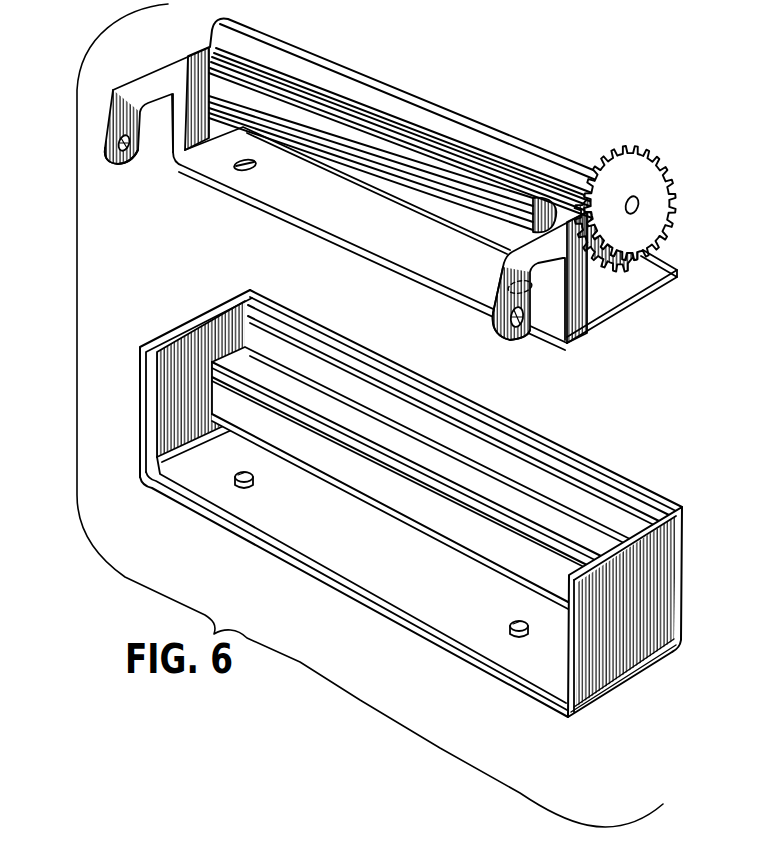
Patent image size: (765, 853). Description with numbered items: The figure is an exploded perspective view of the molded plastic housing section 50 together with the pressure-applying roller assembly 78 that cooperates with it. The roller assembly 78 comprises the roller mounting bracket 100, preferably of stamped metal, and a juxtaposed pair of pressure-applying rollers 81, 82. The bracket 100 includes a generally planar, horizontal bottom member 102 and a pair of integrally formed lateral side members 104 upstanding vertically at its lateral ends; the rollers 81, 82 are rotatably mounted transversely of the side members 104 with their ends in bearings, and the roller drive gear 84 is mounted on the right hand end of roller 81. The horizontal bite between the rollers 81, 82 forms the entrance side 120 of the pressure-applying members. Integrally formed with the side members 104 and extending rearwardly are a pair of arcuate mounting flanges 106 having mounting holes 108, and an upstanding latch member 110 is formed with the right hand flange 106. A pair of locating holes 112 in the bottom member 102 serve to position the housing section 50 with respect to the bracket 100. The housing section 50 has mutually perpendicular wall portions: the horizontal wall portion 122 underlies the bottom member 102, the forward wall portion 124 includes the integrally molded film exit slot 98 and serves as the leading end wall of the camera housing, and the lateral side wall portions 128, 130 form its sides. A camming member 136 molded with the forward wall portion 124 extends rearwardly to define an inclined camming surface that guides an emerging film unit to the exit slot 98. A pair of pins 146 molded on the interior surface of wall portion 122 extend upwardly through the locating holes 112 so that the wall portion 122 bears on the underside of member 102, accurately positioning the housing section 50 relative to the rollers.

The housing section 50 is at (409, 528).
The pressure-applying roller assembly 78 is at (193, 190).
The pressure-applying roller 81 is at (403, 139).
The pressure-applying roller 82 is at (385, 172).
The roller drive gear 84 is at (637, 152).
The film exit slot 98 is at (333, 430).
The roller mounting bracket 100 is at (567, 343).
The bottom member 102 is at (365, 234).
The lateral side members 104 is at (177, 77).
The arcuate mounting flanges 106 is at (103, 110).
The mounting holes 108 is at (127, 165).
The latch member 110 is at (527, 236).
The locating holes 112 is at (253, 161).
The entrance side 120 is at (473, 173).
The horizontal wall portion 122 is at (323, 533).
The forward wall portion 124 is at (557, 447).
The lateral side wall portion 128 is at (177, 396).
The lateral side wall portion 130 is at (660, 587).
The camming member 136 is at (329, 346).
The pins 146 is at (254, 483).